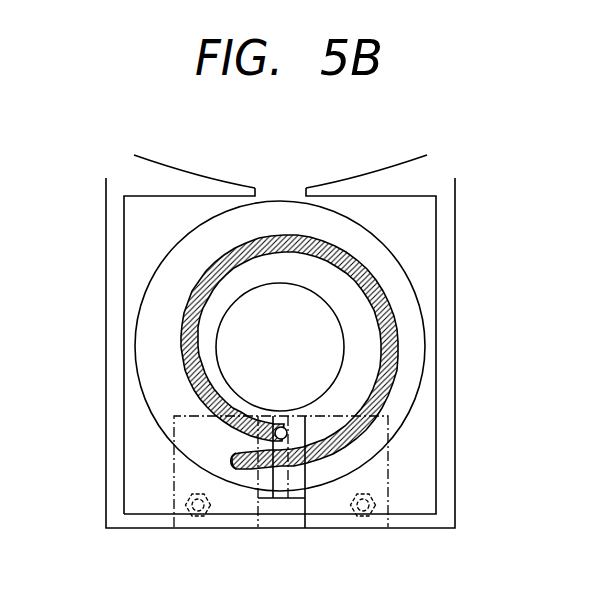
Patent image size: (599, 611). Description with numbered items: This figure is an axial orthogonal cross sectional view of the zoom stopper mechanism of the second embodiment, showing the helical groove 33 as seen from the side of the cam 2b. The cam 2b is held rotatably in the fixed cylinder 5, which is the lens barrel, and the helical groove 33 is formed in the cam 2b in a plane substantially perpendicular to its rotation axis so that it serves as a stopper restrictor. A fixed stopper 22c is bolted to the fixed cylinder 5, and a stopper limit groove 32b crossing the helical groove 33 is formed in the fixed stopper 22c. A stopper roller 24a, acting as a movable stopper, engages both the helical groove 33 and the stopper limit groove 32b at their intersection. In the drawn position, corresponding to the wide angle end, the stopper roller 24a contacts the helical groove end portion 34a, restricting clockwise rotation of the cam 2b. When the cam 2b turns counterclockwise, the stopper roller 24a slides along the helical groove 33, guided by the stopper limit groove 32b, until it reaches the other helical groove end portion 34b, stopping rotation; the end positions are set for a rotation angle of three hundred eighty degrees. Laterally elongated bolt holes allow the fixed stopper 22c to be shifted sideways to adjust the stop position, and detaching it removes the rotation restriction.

The fixed cylinder 5 is at (162, 185).
The cam 2b is at (281, 213).
The helical groove 33 is at (395, 372).
The helical groove end portion 34a is at (289, 433).
The helical groove end portion 34b is at (233, 455).
The stopper limit groove 32b is at (273, 487).
The stopper roller 24a is at (288, 467).
The fixed stopper 22c is at (390, 490).